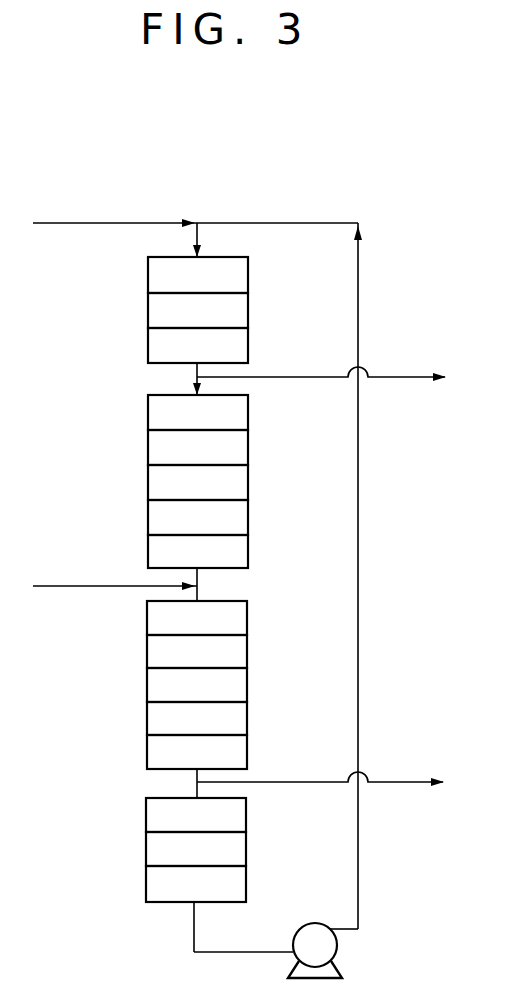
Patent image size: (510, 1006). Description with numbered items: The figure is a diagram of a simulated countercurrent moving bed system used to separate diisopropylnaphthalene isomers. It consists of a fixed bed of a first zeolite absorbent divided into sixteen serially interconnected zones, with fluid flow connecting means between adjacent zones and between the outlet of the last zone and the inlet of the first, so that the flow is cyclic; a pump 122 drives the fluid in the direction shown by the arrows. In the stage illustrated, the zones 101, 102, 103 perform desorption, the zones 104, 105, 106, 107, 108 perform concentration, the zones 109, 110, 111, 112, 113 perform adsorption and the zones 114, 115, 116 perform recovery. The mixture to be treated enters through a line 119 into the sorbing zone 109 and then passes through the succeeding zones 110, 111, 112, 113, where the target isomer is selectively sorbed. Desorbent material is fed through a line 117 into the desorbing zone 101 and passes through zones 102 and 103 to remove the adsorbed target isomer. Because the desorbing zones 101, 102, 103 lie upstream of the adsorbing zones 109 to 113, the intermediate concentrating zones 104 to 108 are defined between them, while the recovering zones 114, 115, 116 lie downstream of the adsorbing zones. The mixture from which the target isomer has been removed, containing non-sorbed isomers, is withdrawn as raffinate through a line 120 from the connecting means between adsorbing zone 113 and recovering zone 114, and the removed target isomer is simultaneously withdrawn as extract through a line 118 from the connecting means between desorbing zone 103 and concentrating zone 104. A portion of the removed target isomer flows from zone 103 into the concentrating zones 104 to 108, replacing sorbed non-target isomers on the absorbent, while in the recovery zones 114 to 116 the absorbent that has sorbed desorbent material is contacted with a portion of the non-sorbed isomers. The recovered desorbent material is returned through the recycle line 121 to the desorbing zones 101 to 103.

The desorbing zone 101 is at (198, 275).
The desorbing zone 102 is at (198, 310).
The desorbing zone 103 is at (198, 345).
The concentrating zone 104 is at (198, 412).
The concentrating zone 105 is at (198, 447).
The concentrating zone 106 is at (198, 482).
The concentrating zone 107 is at (198, 517).
The concentrating zone 108 is at (198, 551).
The adsorbing zone 109 is at (197, 618).
The adsorbing zone 110 is at (197, 651).
The adsorbing zone 111 is at (197, 685).
The adsorbing zone 112 is at (197, 718).
The adsorbing zone 113 is at (197, 752).
The recovering zone 114 is at (196, 815).
The recovering zone 115 is at (196, 849).
The recovering zone 116 is at (196, 884).
The line 117 is at (50, 225).
The line 118 is at (300, 378).
The line 119 is at (64, 588).
The line 120 is at (283, 784).
The recycle line 121 is at (360, 540).
The pump 122 is at (338, 948).